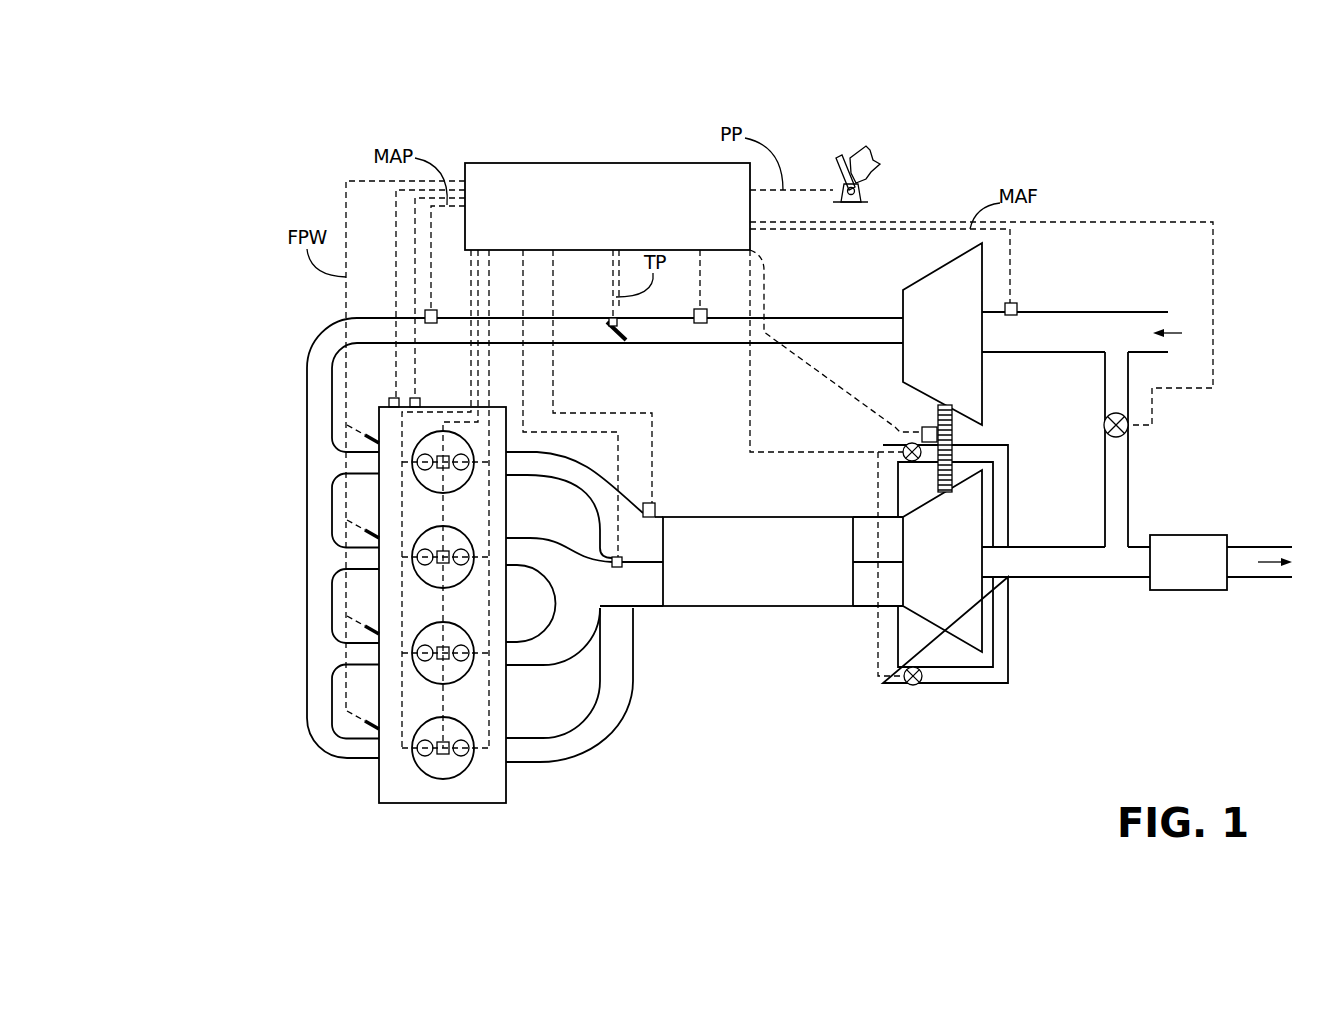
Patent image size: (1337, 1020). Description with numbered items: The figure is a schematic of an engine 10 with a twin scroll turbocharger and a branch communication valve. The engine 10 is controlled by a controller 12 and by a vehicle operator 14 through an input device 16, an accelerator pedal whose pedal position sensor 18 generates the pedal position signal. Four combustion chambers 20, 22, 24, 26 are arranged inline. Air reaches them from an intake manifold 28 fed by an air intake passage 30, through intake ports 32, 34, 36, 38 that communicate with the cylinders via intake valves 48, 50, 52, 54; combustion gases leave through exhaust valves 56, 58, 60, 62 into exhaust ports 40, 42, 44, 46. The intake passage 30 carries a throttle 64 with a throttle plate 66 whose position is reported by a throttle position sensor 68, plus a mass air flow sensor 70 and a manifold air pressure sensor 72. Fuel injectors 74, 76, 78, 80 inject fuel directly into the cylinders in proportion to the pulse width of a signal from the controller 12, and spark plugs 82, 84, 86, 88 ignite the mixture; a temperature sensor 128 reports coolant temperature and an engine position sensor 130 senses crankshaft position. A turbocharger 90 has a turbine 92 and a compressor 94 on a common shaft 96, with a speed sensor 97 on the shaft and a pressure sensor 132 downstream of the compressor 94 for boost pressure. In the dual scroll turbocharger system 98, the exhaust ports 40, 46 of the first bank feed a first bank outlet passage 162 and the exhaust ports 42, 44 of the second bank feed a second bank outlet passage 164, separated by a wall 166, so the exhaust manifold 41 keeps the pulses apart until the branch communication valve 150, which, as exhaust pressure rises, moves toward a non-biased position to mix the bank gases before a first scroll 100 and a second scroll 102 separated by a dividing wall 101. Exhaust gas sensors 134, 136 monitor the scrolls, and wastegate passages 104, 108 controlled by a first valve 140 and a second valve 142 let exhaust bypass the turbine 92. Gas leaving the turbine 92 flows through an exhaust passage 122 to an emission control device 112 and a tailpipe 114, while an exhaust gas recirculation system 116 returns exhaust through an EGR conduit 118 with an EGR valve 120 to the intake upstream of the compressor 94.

The engine 10 is at (216, 471).
The controller 12 is at (607, 206).
The vehicle operator 14 is at (870, 156).
The input device 16 is at (833, 172).
The pedal position sensor 18 is at (857, 189).
The combustion chamber 20 is at (465, 484).
The combustion chamber 22 is at (465, 579).
The combustion chamber 24 is at (465, 675).
The combustion chamber 26 is at (465, 770).
The intake manifold 28 is at (305, 367).
The air intake passage 30 is at (1088, 312).
The intake port 32 is at (372, 458).
The intake port 34 is at (372, 555).
The intake port 36 is at (372, 652).
The intake port 38 is at (342, 757).
The exhaust port 40 is at (508, 468).
The exhaust manifold 41 is at (588, 795).
The exhaust port 42 is at (508, 565).
The exhaust port 44 is at (508, 661).
The exhaust port 46 is at (508, 758).
The intake valve 48 is at (423, 453).
The intake valve 50 is at (423, 548).
The intake valve 52 is at (423, 644).
The intake valve 54 is at (423, 739).
The exhaust valve 56 is at (463, 453).
The exhaust valve 58 is at (463, 548).
The exhaust valve 60 is at (463, 644).
The exhaust valve 62 is at (463, 739).
The throttle 64 is at (610, 328).
The throttle plate 66 is at (624, 340).
The throttle position sensor 68 is at (614, 320).
The mass air flow sensor 70 is at (1017, 305).
The manifold air pressure sensor 72 is at (438, 312).
The fuel injector 74 is at (375, 440).
The fuel injector 76 is at (375, 535).
The fuel injector 78 is at (375, 631).
The fuel injector 80 is at (375, 726).
The spark plug 82 is at (437, 466).
The spark plug 84 is at (437, 561).
The spark plug 86 is at (437, 657).
The spark plug 88 is at (437, 752).
The turbocharger 90 is at (1045, 448).
The turbine 92 is at (942, 561).
The compressor 94 is at (942, 334).
The common shaft 96 is at (937, 425).
The speed sensor 97 is at (900, 433).
The dual scroll turbocharger system 98 is at (1077, 727).
The first scroll 100 is at (875, 502).
The dividing wall 101 is at (863, 565).
The second scroll 102 is at (866, 608).
The wastegate passage 104 is at (985, 440).
The wastegate passage 108 is at (927, 692).
The emission control device 112 is at (1188, 562).
The tailpipe 114 is at (1247, 546).
The exhaust gas recirculation system 116 is at (1172, 445).
The EGR conduit 118 is at (1105, 498).
The EGR valve 120 is at (1104, 422).
The exhaust passage 122 is at (1053, 580).
The temperature sensor 128 is at (416, 398).
The engine position sensor 130 is at (393, 398).
The pressure sensor 132 is at (707, 308).
The exhaust gas sensor 134 is at (657, 515).
The exhaust gas sensor 136 is at (602, 557).
The first valve 140 is at (915, 463).
The second valve 142 is at (910, 685).
The branch communication valve 150 is at (758, 561).
The first bank outlet passage 162 is at (643, 535).
The second bank outlet passage 164 is at (631, 590).
The wall 166 is at (664, 567).